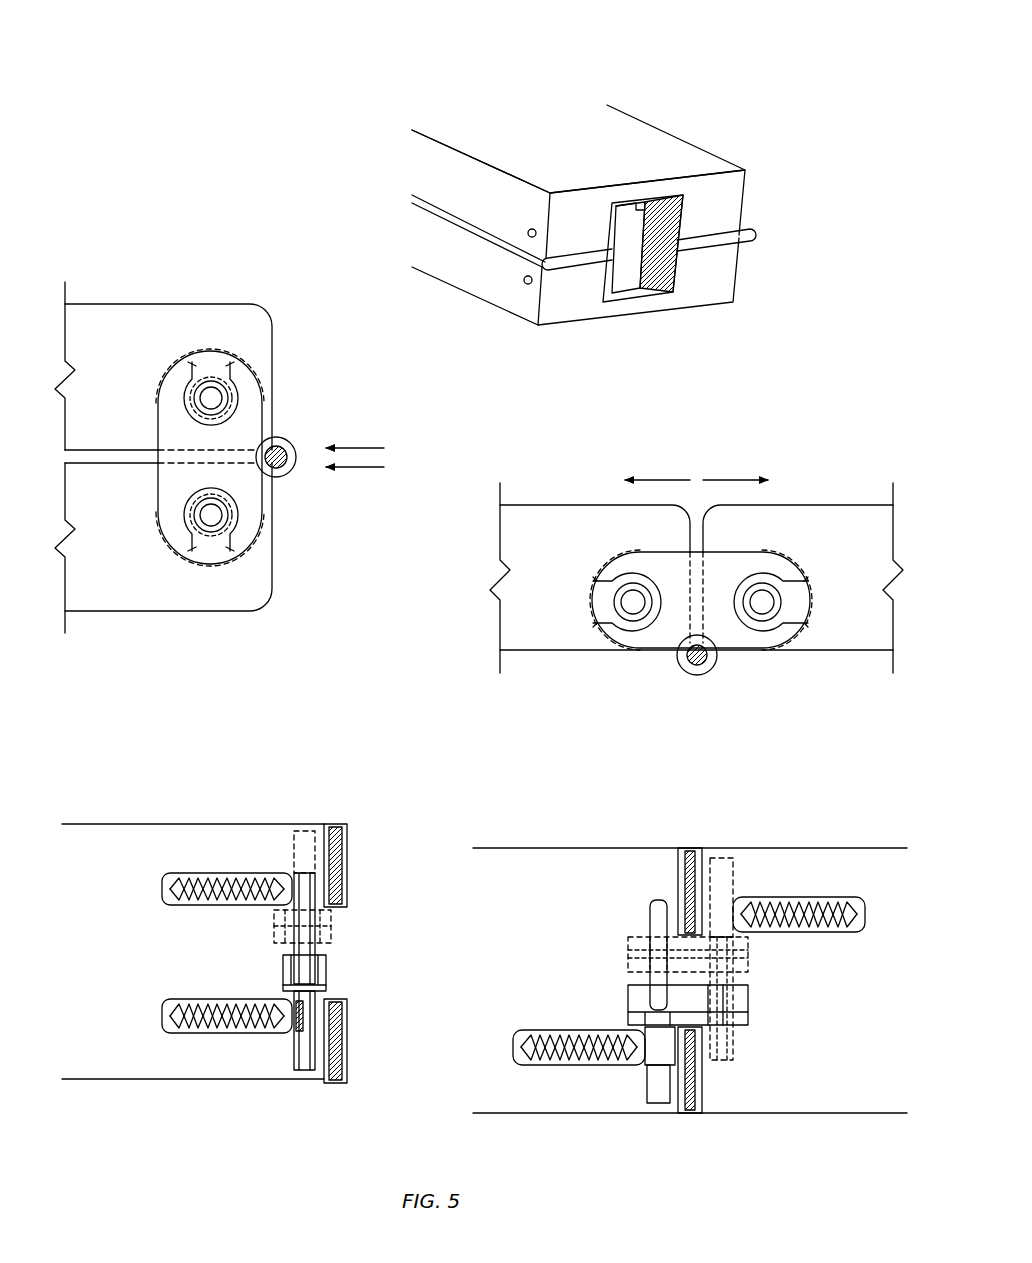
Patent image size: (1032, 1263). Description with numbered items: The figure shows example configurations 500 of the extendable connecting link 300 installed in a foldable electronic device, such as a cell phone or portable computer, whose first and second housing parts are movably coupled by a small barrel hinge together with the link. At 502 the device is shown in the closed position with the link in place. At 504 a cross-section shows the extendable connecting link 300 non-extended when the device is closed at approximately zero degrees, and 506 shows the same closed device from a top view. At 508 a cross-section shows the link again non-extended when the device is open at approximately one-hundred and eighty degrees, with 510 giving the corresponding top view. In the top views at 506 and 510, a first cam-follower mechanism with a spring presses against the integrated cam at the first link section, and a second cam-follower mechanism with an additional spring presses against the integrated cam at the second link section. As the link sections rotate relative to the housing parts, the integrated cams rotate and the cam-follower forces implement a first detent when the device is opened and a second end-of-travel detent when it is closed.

The example configurations 500 is at (730, 58).
The closed position view 502 is at (488, 102).
The closed-position cross-section 504 is at (144, 238).
The closed-position top view 506 is at (149, 764).
The open-position cross-section 508 is at (785, 448).
The open-position top view 510 is at (704, 815).
The extendable connecting link 300 is at (628, 272).